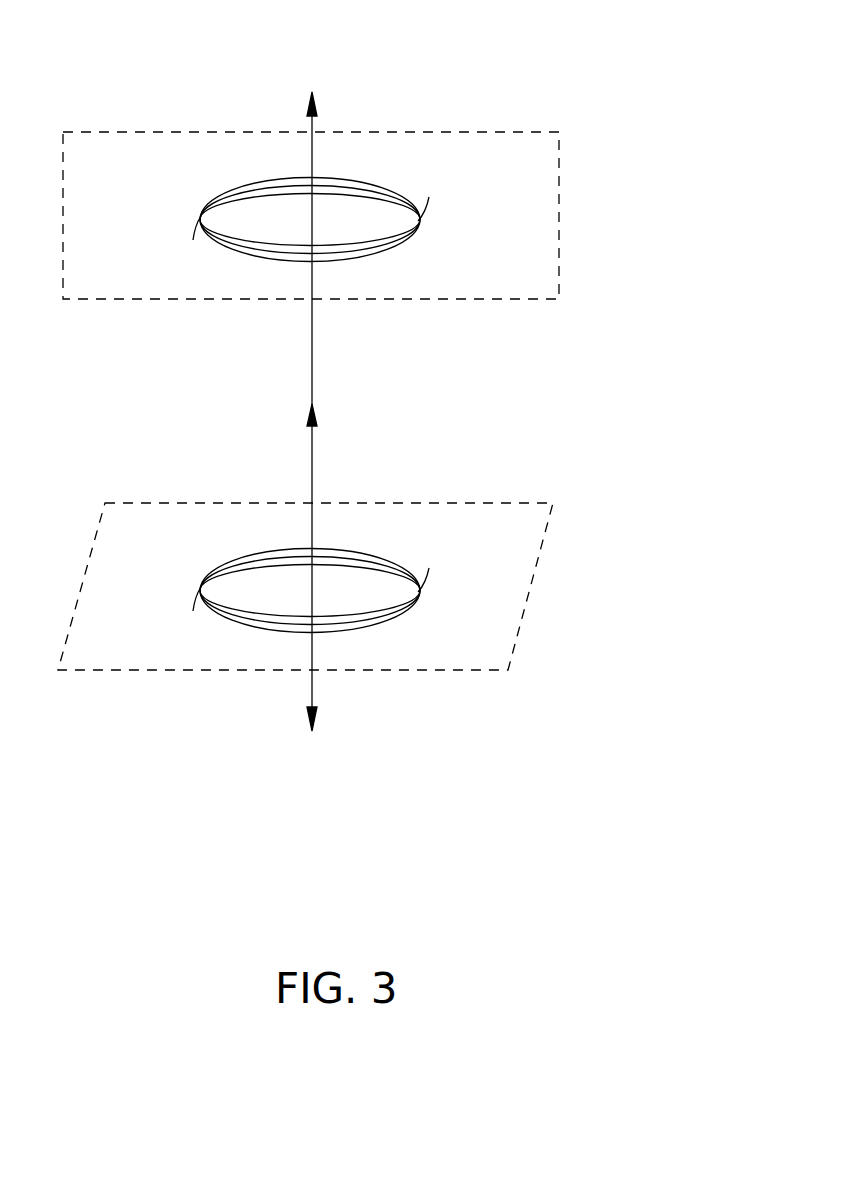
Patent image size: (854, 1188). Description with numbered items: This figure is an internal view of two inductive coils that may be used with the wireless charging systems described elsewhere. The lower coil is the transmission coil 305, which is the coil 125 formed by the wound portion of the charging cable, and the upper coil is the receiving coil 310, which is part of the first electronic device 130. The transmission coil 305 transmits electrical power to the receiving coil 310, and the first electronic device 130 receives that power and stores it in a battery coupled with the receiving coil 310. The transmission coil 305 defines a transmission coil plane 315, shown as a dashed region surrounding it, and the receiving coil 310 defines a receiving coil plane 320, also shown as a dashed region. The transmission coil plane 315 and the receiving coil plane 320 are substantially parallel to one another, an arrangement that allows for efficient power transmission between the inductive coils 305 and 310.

The transmission coil 125 is at (347, 542).
The first electronic device 130 is at (375, 165).
The transmission coil 305 is at (422, 600).
The receiving coil 310 is at (420, 227).
The transmission coil plane 315 is at (533, 592).
The receiving coil plane 320 is at (562, 223).